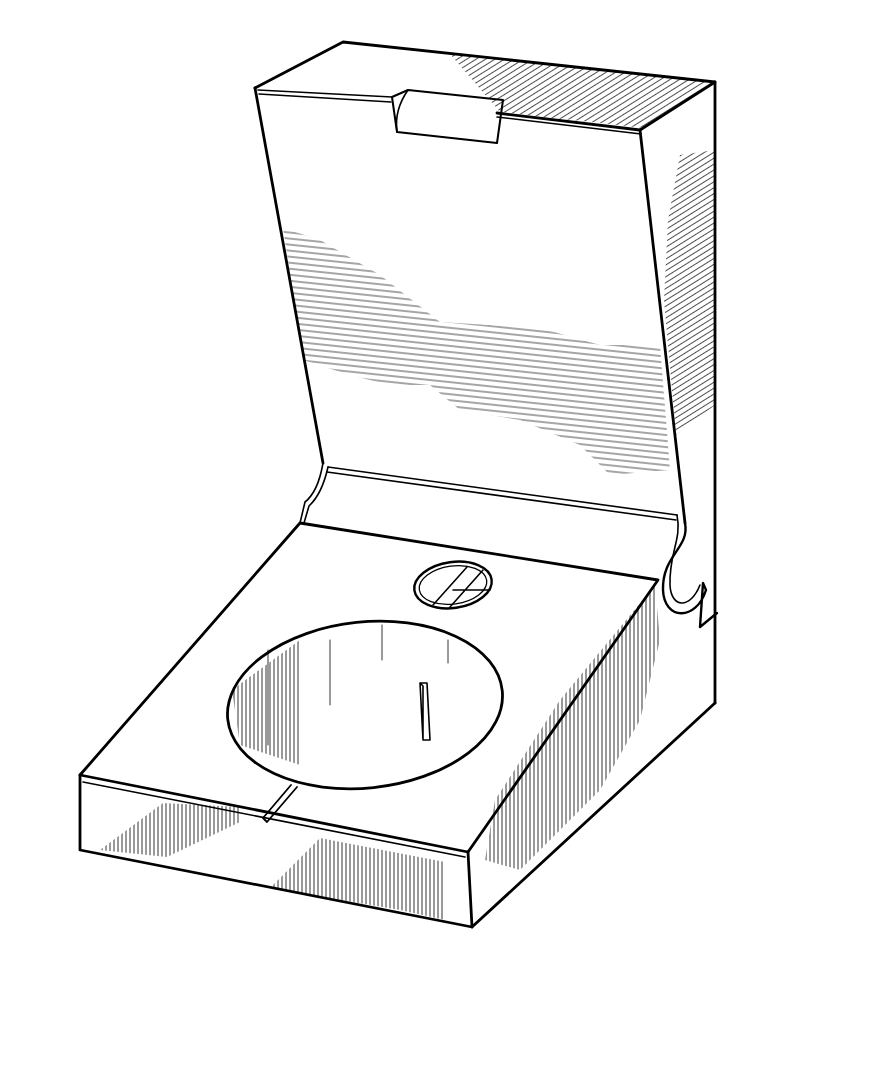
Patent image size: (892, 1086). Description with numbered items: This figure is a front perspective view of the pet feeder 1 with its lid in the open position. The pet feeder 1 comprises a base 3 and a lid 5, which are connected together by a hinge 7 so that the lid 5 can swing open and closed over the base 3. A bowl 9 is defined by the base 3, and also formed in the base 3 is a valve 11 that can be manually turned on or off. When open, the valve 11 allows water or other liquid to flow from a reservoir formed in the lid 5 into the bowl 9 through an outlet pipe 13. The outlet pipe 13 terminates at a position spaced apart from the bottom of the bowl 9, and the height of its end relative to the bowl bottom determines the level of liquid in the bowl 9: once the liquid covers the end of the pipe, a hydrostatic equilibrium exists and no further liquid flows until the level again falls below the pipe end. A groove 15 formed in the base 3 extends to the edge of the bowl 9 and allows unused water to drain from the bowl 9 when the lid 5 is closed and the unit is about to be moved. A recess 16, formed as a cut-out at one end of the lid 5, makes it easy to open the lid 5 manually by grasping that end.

The pet feeder 1 is at (238, 471).
The base 3 is at (568, 792).
The lid 5 is at (682, 172).
The hinge 7 is at (687, 567).
The bowl 9 is at (283, 695).
The valve 11 is at (493, 584).
The outlet pipe 13 is at (428, 712).
The groove 15 is at (290, 784).
The recess 16 is at (453, 117).